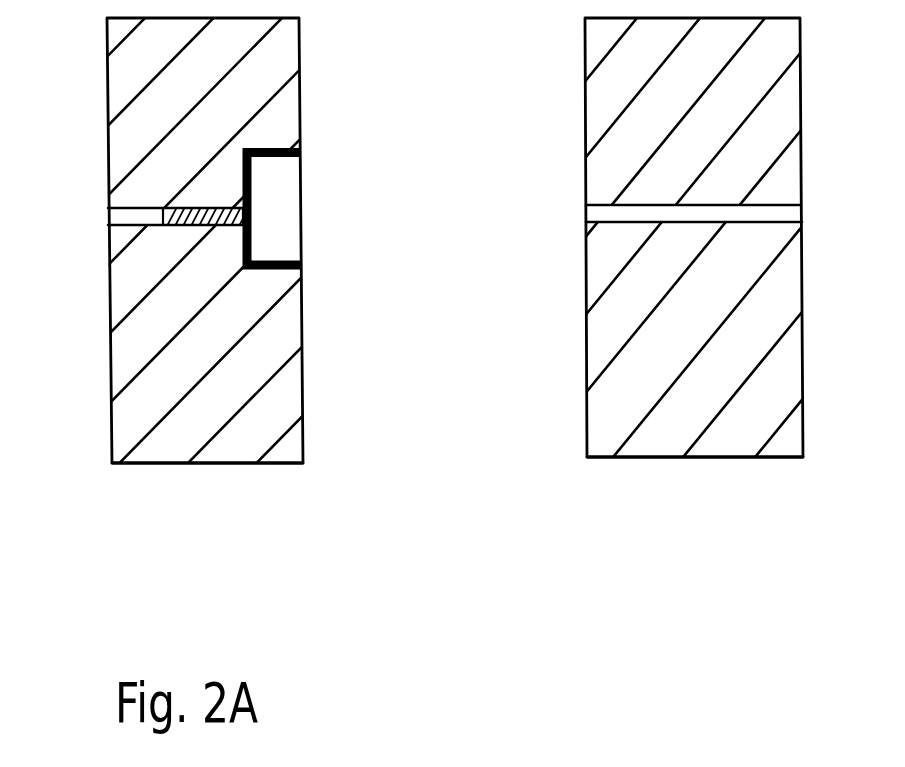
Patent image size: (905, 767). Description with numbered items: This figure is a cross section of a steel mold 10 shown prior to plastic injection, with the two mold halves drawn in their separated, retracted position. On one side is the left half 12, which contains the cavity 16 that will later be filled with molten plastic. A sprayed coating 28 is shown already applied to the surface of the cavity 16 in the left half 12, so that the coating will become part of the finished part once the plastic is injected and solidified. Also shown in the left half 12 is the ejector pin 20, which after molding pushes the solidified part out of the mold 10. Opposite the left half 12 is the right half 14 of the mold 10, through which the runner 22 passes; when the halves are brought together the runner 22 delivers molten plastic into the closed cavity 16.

The steel mold 10 is at (224, 447).
The left half 12 is at (132, 341).
The right half 14 is at (783, 293).
The cavity 16 is at (284, 241).
The ejector pin 20 is at (192, 206).
The runner 22 is at (772, 215).
The sprayed coating 28 is at (255, 176).